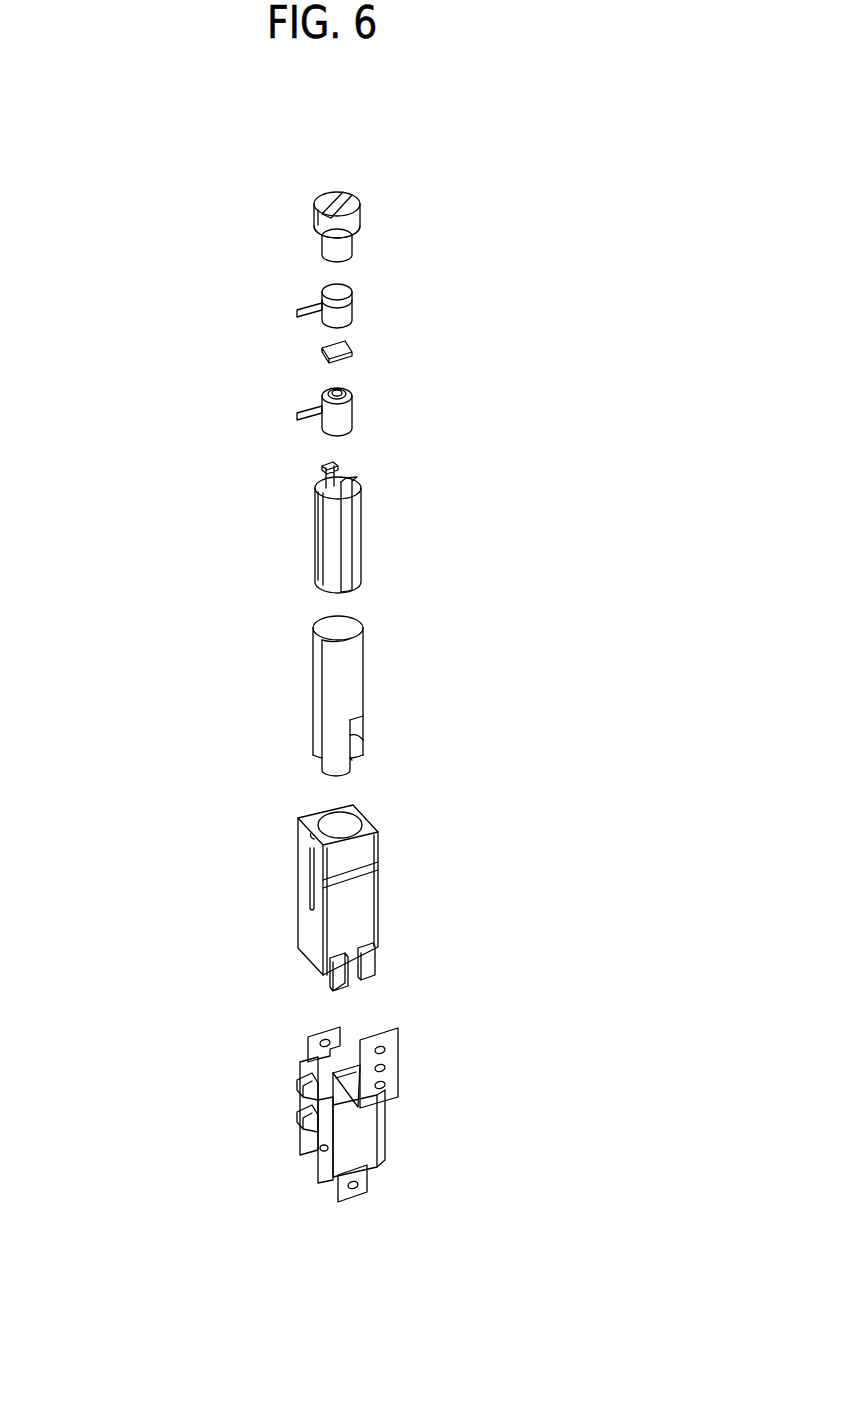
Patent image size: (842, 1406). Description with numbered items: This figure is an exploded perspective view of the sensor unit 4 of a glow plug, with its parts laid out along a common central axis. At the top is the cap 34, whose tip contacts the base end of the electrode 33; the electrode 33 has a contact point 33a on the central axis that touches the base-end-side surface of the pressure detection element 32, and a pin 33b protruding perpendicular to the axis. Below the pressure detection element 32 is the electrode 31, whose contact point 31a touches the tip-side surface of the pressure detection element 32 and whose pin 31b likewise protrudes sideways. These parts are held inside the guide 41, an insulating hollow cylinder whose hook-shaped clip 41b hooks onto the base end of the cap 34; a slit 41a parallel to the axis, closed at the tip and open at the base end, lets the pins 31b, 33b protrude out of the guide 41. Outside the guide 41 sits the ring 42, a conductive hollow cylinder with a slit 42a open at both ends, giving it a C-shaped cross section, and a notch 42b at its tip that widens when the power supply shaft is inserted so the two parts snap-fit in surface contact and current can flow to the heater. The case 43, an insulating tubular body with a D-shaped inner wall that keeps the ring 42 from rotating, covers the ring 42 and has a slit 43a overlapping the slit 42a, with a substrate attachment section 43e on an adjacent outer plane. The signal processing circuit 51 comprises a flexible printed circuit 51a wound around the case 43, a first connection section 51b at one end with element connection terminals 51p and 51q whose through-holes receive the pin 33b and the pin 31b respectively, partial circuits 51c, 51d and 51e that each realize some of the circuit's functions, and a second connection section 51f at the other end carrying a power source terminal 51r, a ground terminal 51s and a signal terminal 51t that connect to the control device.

The sensor unit 4 is at (397, 156).
The cap 34 is at (312, 212).
The electrode 33 is at (295, 300).
The contact point 33a is at (352, 318).
The pin 33b is at (297, 312).
The pressure detection element 32 is at (322, 350).
The electrode 31 is at (296, 408).
The contact point 31a is at (344, 390).
The pin 31b is at (297, 414).
The guide 41 is at (239, 526).
The slit 41a is at (318, 537).
The clip 41b is at (322, 478).
The ring 42 is at (295, 703).
The slit 42a is at (320, 680).
The notch 42b is at (352, 762).
The case 43 is at (308, 894).
The slit 43a is at (306, 869).
The substrate attachment section 43e is at (366, 912).
The signal processing circuit 51 is at (322, 1138).
The flexible printed circuit 51a is at (317, 1160).
The first connection section 51b is at (236, 1102).
The partial circuit 51c is at (302, 1055).
The partial circuit 51d is at (386, 1128).
The partial circuit 51e is at (360, 1172).
The second connection section 51f is at (441, 1056).
The element connection terminal 51p is at (298, 1085).
The element connection terminal 51q is at (298, 1121).
The power source terminal 51r is at (386, 1048).
The ground terminal 51s is at (386, 1066).
The signal terminal 51t is at (428, 1090).